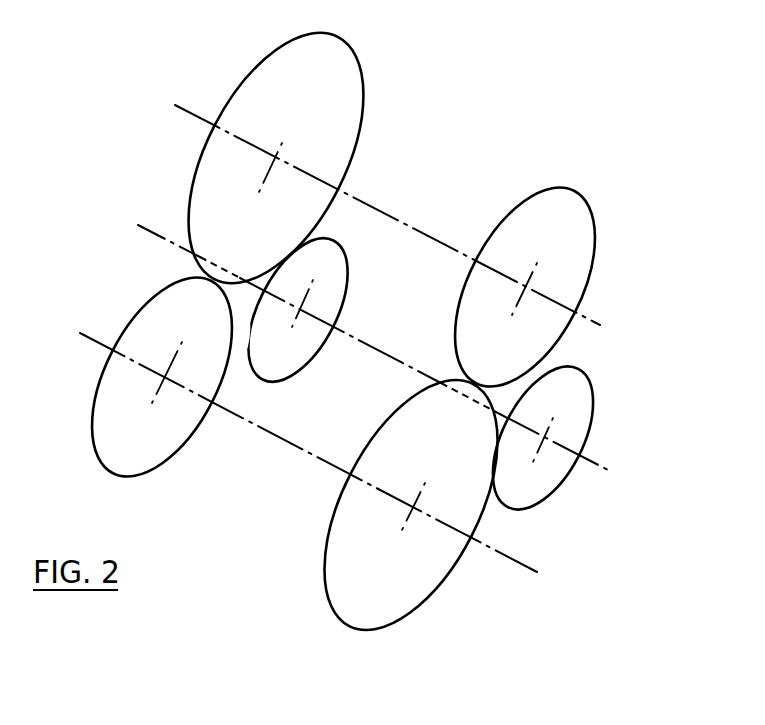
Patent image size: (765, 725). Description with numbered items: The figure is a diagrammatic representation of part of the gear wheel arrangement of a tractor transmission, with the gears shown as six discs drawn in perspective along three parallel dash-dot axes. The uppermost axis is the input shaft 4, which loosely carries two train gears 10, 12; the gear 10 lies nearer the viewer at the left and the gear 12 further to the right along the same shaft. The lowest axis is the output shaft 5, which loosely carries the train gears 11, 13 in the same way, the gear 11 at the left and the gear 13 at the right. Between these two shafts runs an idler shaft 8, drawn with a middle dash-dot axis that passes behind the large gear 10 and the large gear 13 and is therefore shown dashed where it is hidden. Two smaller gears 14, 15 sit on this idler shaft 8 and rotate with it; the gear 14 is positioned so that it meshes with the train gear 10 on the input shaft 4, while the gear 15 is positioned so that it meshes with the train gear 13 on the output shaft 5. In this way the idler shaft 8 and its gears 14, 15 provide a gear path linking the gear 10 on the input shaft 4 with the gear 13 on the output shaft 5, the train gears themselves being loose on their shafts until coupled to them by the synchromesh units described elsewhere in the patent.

The input shaft 4 is at (203, 120).
The output shaft 5 is at (283, 440).
The idler shaft 8 is at (400, 369).
The train gear 10 is at (362, 116).
The train gear 11 is at (197, 428).
The train gear 12 is at (587, 205).
The train gear 13 is at (325, 566).
The gear 14 is at (293, 378).
The gear 15 is at (593, 407).